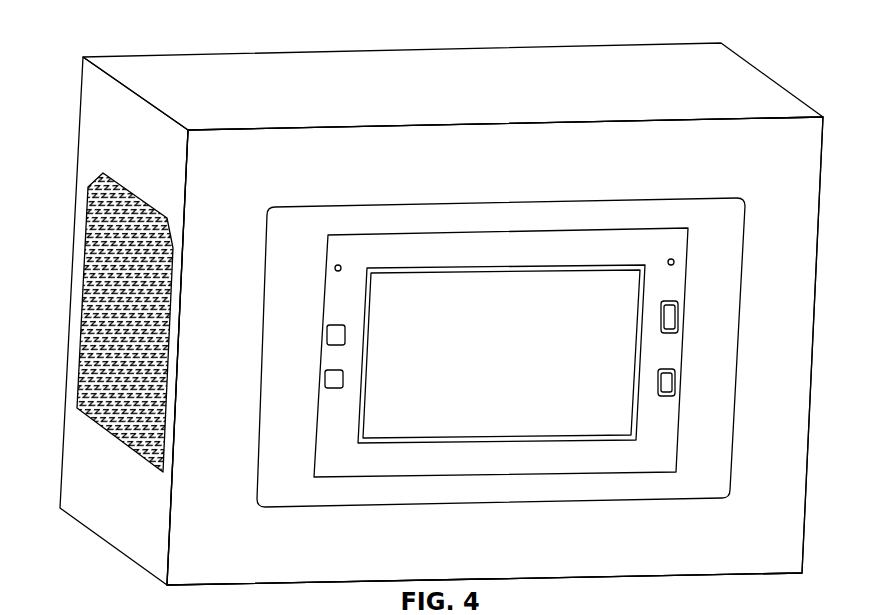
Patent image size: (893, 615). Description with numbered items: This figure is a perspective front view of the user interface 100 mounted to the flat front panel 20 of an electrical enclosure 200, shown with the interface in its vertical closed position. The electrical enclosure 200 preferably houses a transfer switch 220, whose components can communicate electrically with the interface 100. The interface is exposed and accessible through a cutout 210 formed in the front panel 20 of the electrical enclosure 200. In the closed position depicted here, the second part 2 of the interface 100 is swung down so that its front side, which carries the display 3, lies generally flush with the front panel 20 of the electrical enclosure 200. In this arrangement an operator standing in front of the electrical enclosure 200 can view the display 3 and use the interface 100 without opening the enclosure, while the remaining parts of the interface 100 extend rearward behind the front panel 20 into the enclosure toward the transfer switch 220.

The electrical enclosure 200 is at (107, 558).
The front panel 20 is at (233, 175).
The cutout 210 is at (484, 594).
The transfer switch 220 is at (103, 173).
The interface 100 is at (392, 190).
The second part 2 is at (716, 282).
The display 3 is at (525, 368).